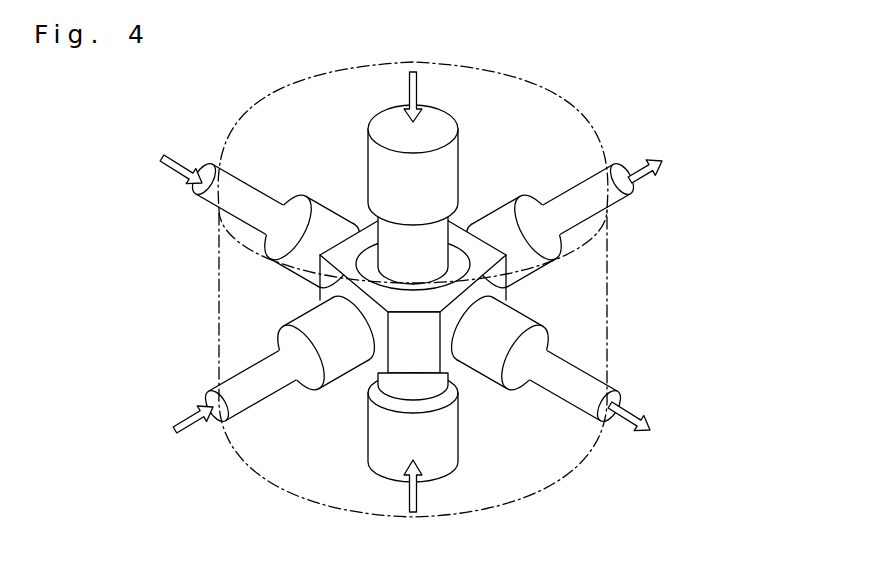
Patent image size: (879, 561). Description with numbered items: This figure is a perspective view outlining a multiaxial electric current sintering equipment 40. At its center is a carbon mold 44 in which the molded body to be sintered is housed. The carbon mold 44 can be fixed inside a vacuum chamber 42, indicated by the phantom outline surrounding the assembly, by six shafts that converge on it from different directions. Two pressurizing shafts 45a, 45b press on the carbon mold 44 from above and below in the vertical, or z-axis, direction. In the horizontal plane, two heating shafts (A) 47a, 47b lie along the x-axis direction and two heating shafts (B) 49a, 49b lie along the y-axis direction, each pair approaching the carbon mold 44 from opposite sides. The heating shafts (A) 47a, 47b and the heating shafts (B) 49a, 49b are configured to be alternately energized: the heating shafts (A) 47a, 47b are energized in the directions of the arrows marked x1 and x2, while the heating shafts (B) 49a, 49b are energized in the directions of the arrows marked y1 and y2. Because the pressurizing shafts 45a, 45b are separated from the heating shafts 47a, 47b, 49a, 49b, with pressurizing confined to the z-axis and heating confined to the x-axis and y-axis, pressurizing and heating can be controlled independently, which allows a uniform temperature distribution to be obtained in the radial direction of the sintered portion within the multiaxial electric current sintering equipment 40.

The multiaxial electric current sintering equipment 40 is at (415, 274).
The vacuum chamber 42 is at (580, 113).
The carbon mold 44 is at (500, 290).
The pressurizing shaft 45a is at (373, 165).
The pressurizing shaft 45b is at (448, 440).
The heating shaft (A) 47a is at (218, 382).
The heating shaft (A) 47b is at (618, 200).
The heating shaft (B) 49a is at (209, 198).
The heating shaft (B) 49b is at (607, 386).